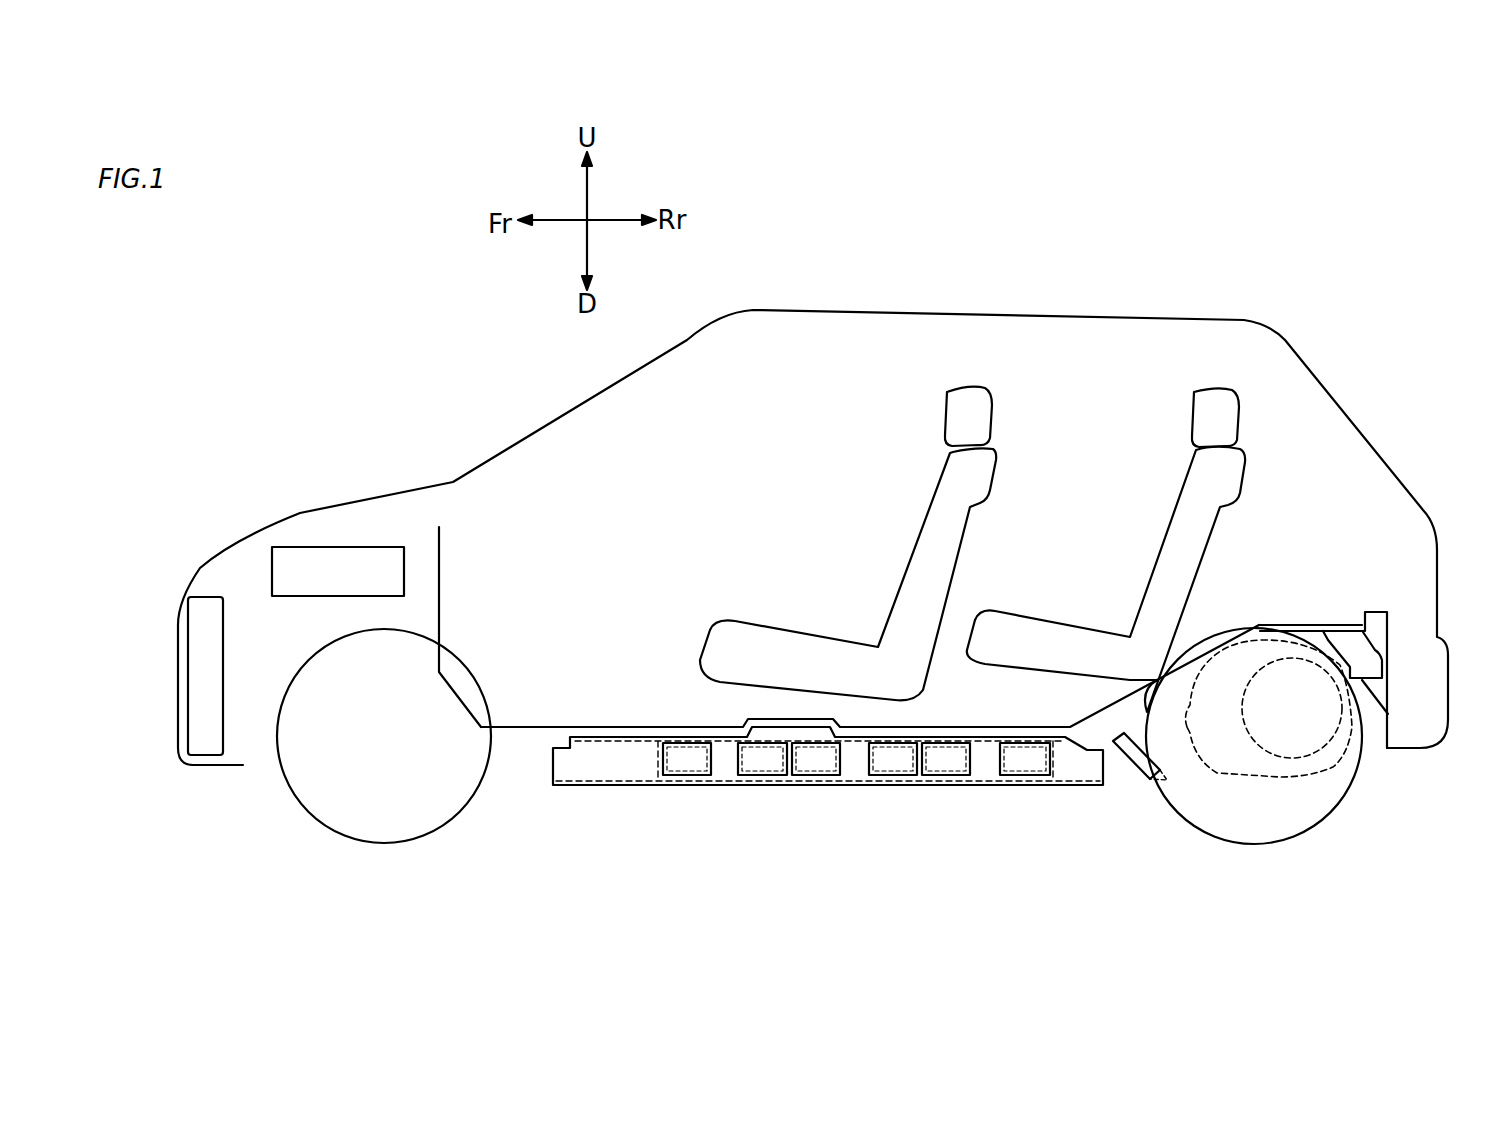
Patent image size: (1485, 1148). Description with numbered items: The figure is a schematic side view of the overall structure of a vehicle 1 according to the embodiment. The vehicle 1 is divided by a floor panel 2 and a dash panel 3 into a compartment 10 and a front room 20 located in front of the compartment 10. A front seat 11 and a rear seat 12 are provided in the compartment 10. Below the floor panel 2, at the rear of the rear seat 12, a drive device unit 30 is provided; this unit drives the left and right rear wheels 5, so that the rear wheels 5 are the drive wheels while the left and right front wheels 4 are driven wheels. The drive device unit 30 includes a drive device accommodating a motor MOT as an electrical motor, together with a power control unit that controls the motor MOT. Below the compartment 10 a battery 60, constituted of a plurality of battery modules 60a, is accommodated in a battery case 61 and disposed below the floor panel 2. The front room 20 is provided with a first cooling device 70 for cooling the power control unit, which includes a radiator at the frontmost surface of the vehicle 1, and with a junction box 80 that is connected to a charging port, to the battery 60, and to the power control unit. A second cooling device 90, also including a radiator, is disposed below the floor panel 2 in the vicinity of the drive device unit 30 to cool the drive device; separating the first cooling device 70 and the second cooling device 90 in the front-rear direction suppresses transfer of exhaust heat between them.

The vehicle 1 is at (436, 314).
The floor panel 2 is at (553, 727).
The dash panel 3 is at (441, 567).
The front wheel 4 is at (472, 798).
The rear wheel 5 is at (1343, 800).
The compartment 10 is at (788, 433).
The front seat 11 is at (927, 530).
The rear seat 12 is at (1178, 525).
The front room 20 is at (365, 531).
The drive device unit 30 is at (1377, 720).
The battery 60 is at (832, 811).
The battery module 60a is at (942, 763).
The battery case 61 is at (983, 787).
The first cooling device 70 is at (200, 597).
The junction box 80 is at (305, 563).
The second cooling device 90 is at (1130, 758).
The motor MOT is at (1302, 767).